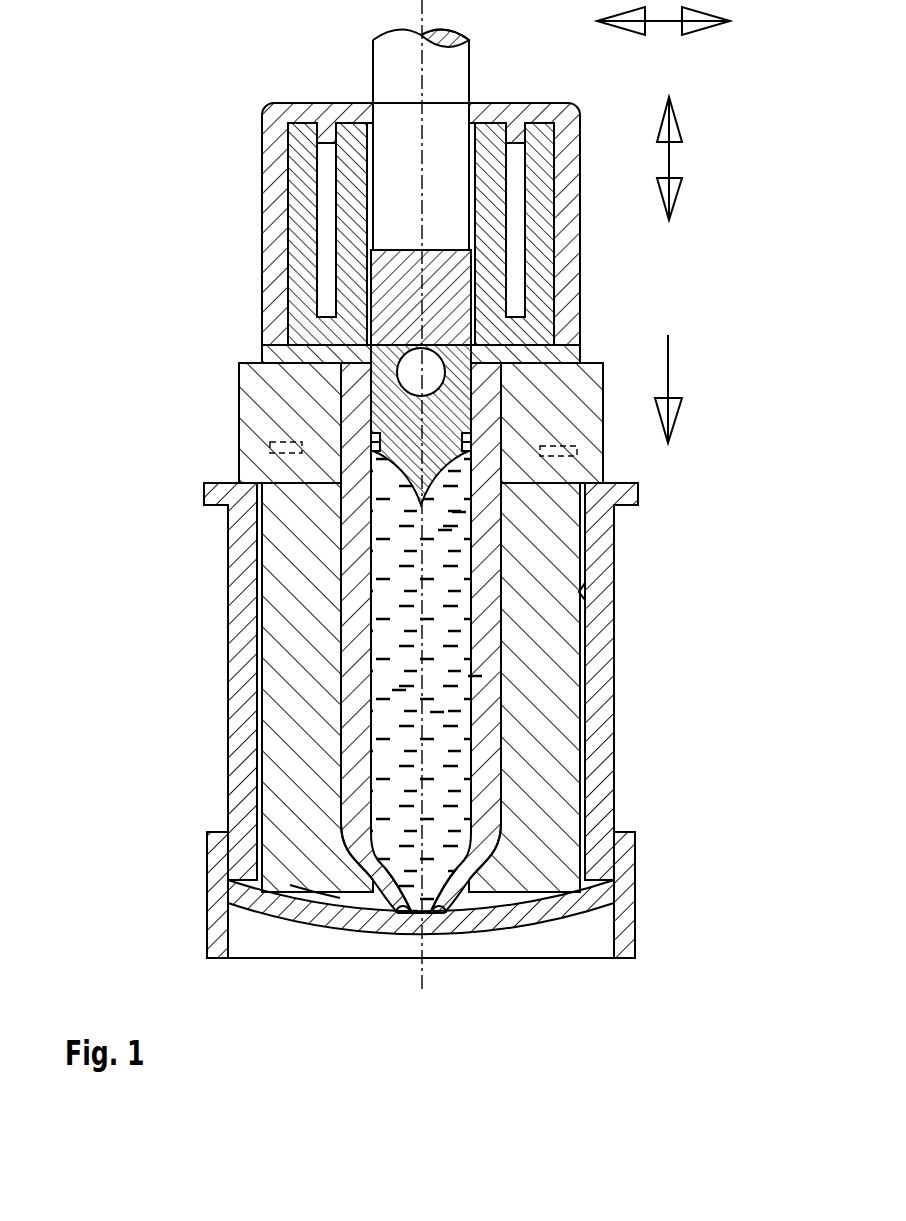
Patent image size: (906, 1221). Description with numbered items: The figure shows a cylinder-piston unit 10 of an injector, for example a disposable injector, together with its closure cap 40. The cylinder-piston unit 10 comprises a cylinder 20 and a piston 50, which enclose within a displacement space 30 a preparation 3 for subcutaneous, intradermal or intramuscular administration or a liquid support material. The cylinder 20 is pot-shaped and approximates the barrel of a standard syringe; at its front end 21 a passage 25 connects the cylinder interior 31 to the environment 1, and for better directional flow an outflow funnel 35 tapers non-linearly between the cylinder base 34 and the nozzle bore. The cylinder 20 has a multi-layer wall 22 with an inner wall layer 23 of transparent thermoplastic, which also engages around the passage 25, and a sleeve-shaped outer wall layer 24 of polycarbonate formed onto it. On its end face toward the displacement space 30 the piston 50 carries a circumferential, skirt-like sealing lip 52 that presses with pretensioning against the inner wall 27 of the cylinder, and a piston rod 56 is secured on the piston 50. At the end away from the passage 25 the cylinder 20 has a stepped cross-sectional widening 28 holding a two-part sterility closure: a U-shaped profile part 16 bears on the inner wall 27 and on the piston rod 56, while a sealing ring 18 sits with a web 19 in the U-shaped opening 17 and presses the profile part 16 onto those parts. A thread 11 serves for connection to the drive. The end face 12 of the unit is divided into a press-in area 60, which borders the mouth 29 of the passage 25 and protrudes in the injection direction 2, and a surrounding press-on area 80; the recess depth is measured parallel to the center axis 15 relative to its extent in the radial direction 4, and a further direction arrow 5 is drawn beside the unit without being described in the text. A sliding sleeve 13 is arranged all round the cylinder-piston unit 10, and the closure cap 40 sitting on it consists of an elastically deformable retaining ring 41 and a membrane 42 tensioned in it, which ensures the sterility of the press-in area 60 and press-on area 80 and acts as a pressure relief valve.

The environment 1 is at (655, 957).
The injection direction 2 is at (668, 373).
The preparation 3 is at (447, 583).
The radial direction 4 is at (658, 21).
The axial movement direction 5 is at (669, 162).
The cylinder-piston unit 10 is at (620, 629).
The thread 11 is at (578, 465).
The end face 12 is at (282, 897).
The sliding sleeve 13 is at (242, 793).
The center axis 15 is at (422, 655).
The U-shaped profile part 16 is at (300, 256).
The U-shaped opening 17 is at (326, 184).
The sealing ring 18 is at (305, 108).
The web 19 is at (327, 128).
The cylinder 20 is at (278, 429).
The front end 21 is at (393, 921).
The multi-layer wall 22 is at (287, 813).
The inner wall layer 23 is at (355, 762).
The outer wall layer 24 is at (310, 708).
The passage 25 is at (416, 908).
The inner wall 27 is at (477, 683).
The stepped cross-sectional widening 28 is at (540, 352).
The mouth 29 is at (420, 926).
The displacement space 30 is at (383, 573).
The cylinder interior 31 is at (463, 523).
The cylinder base 34 is at (453, 880).
The outflow funnel 35 is at (460, 914).
The closure cap 40 is at (603, 895).
The retaining ring 41 is at (623, 850).
The membrane 42 is at (518, 913).
The piston 50 is at (393, 410).
The sealing lip 52 is at (373, 443).
The piston rod 56 is at (439, 216).
The press-in area 60 is at (403, 921).
The press-on area 80 is at (315, 903).